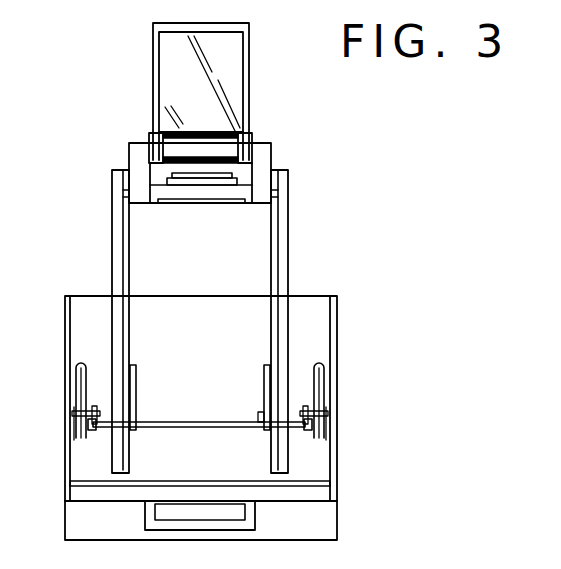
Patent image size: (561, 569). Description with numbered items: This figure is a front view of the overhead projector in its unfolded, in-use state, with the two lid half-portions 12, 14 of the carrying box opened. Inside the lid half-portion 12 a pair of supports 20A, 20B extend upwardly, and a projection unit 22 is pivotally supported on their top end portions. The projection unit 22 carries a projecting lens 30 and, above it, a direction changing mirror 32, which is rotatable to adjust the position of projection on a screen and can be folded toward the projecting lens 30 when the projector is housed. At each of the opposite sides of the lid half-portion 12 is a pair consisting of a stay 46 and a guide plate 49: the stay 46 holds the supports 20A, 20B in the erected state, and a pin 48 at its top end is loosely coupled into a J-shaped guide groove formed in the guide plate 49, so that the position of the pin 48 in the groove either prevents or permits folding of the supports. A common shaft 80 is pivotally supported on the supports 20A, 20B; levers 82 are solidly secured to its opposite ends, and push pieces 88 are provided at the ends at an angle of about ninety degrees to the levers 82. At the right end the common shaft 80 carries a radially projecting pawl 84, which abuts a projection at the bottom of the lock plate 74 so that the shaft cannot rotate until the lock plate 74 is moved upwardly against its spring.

The lid half-portion 12 is at (312, 304).
The lid half-portion 14 is at (355, 514).
The support 20A is at (111, 236).
The support 20B is at (284, 232).
The projection unit 22 is at (289, 130).
The projecting lens 30 is at (217, 175).
The direction changing mirror 32 is at (177, 82).
The stay 46 is at (72, 470).
The pin 48 is at (98, 418).
The guide plate 49 is at (77, 366).
The lock plate 74 is at (262, 378).
The common shaft 80 is at (194, 420).
The lever 82 is at (94, 432).
The pawl 84 is at (259, 412).
The push piece 88 is at (72, 411).